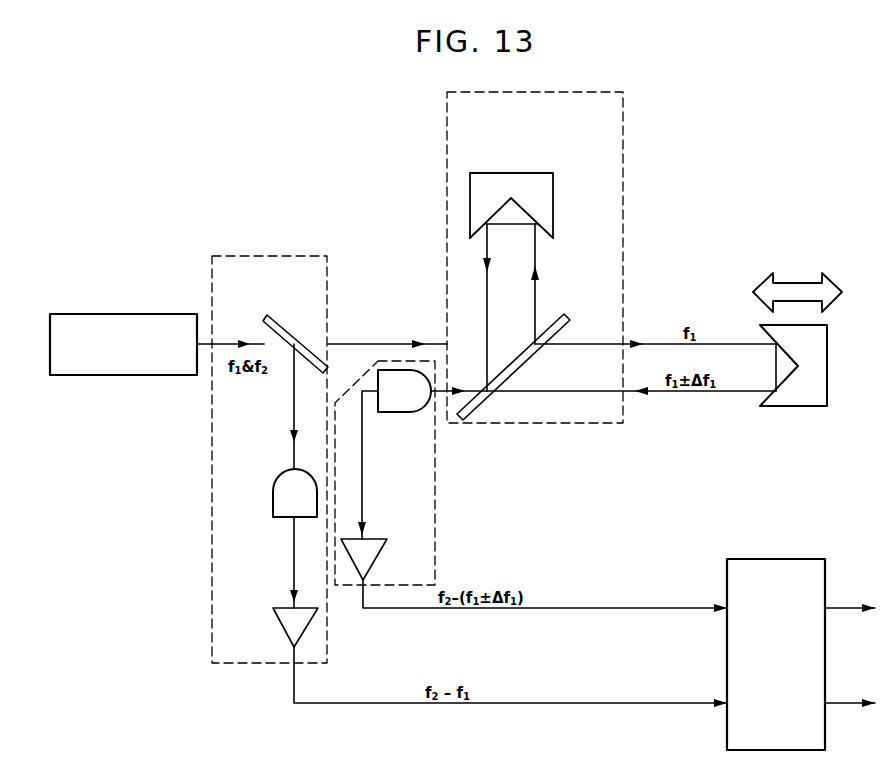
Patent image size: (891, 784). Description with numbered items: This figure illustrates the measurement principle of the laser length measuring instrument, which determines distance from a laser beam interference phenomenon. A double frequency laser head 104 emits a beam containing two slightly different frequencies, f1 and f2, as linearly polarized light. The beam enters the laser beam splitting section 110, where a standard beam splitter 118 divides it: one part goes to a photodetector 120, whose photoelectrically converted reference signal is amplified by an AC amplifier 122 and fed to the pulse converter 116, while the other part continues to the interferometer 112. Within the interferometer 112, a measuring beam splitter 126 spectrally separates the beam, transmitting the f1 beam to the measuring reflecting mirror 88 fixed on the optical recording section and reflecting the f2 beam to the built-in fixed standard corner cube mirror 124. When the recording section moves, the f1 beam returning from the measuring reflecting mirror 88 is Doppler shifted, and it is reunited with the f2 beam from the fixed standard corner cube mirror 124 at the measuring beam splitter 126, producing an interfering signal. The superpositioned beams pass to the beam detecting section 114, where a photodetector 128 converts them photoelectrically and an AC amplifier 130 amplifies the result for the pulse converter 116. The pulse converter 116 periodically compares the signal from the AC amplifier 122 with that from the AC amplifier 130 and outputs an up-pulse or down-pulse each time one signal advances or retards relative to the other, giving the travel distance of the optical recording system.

The measuring reflecting mirror 88 is at (828, 335).
The laser head 104 is at (112, 318).
The laser beam splitting section 110 is at (291, 256).
The interferometer 112 is at (623, 110).
The beam detecting section 114 is at (435, 482).
The pulse converter 116 is at (796, 559).
The standard beam splitter 118 is at (286, 319).
The photodetector 120 is at (273, 494).
The AC amplifier 122 is at (275, 608).
The fixed standard corner cube mirror 124 is at (540, 173).
The measuring beam splitter 126 is at (567, 316).
The photodetector 128 is at (408, 413).
The AC amplifier 130 is at (385, 542).